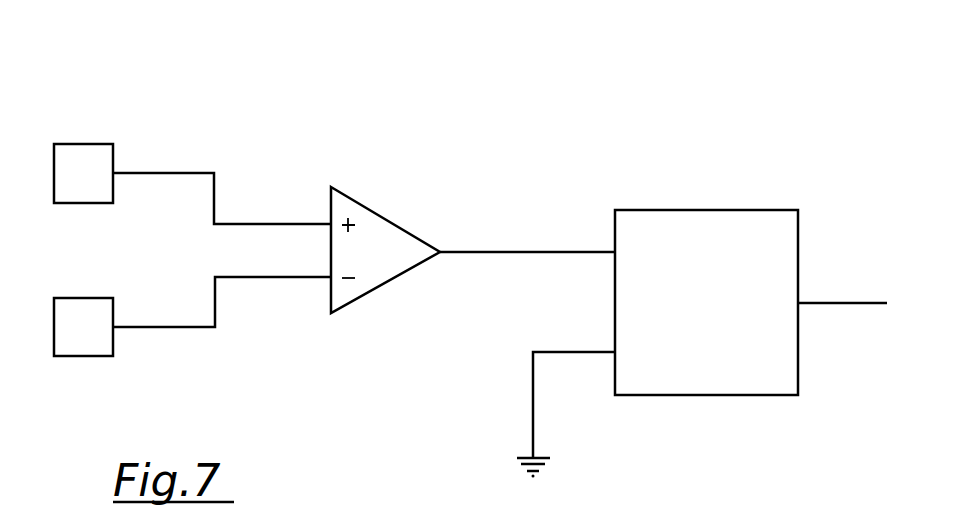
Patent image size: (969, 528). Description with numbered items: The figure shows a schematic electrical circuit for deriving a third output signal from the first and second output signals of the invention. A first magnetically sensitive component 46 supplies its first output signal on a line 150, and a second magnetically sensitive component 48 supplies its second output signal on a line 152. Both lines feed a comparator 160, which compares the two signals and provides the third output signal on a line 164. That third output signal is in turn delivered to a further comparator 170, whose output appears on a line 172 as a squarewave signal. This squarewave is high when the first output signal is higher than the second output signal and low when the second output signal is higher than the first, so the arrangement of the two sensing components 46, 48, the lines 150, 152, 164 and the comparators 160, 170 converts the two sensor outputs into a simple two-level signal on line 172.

The first magnetically sensitive component 46 is at (93, 144).
The second magnetically sensitive component 48 is at (92, 298).
The line 150 is at (200, 173).
The line 152 is at (193, 327).
The comparator 160 is at (388, 218).
The line 164 is at (495, 252).
The comparator 170 is at (692, 210).
The line 172 is at (833, 303).